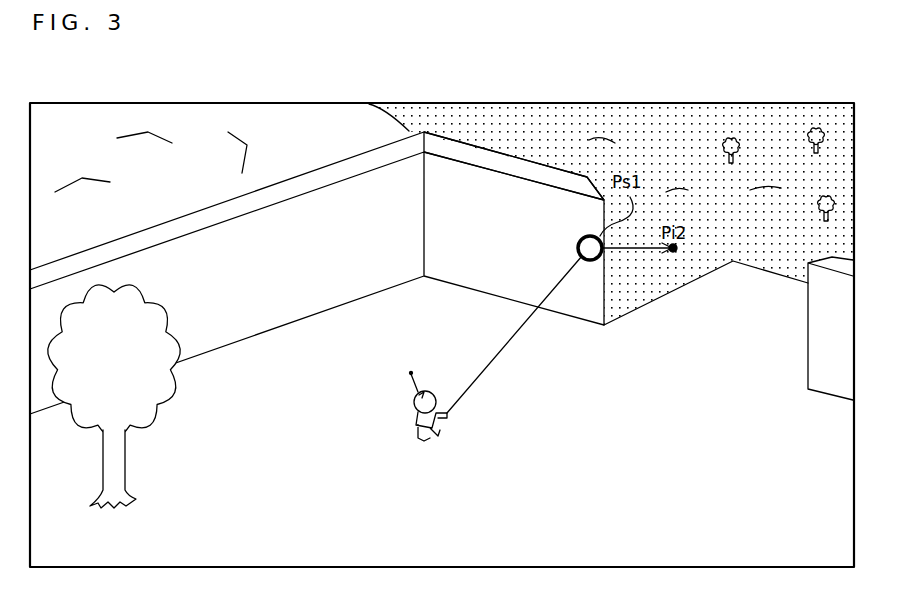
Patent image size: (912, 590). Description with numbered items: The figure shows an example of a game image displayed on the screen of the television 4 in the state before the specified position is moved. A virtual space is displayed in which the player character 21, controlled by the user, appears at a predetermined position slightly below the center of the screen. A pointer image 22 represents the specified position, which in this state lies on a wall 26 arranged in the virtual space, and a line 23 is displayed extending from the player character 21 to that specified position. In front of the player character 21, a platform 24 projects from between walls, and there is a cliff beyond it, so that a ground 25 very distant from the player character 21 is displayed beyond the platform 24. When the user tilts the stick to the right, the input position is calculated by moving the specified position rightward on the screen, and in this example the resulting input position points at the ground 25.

The television 4 is at (745, 102).
The player character 21 is at (413, 428).
The pointer image 22 is at (575, 243).
The line 23 is at (500, 353).
The platform 24 is at (753, 287).
The ground 25 is at (640, 117).
The wall 26 is at (522, 168).